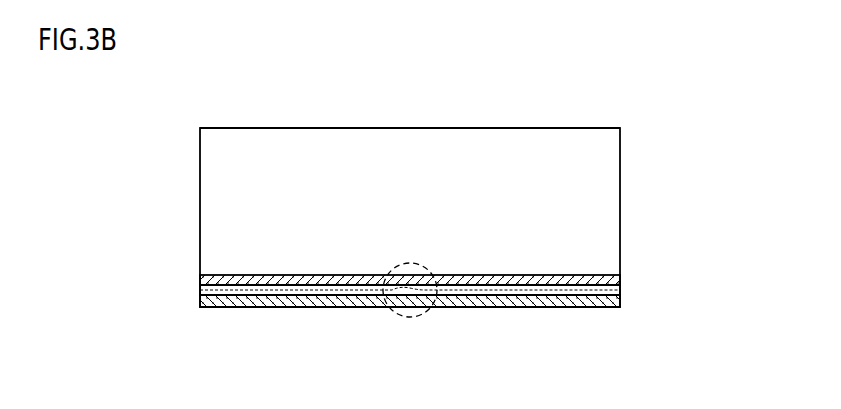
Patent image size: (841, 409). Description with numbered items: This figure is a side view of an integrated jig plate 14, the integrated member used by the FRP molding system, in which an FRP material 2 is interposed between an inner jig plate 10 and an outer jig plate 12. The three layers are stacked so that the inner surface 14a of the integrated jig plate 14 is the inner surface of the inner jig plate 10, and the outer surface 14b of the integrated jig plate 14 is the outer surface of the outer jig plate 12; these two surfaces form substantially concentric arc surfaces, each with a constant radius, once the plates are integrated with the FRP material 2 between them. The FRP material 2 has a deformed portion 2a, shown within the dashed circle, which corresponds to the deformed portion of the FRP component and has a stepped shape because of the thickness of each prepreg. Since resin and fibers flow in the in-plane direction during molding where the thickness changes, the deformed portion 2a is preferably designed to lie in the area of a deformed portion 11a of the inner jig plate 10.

The inner jig plate 10 is at (624, 279).
The outer jig plate 12 is at (624, 302).
The integrated jig plate 14 is at (198, 270).
The inner surface of integrated jig plate 14a is at (468, 160).
The outer surface of integrated jig plate 14b is at (473, 307).
The FRP material 2 is at (203, 287).
The deformed portion of FRP material 2a is at (397, 317).
The deformed portion of inner jig plate 11a is at (423, 272).